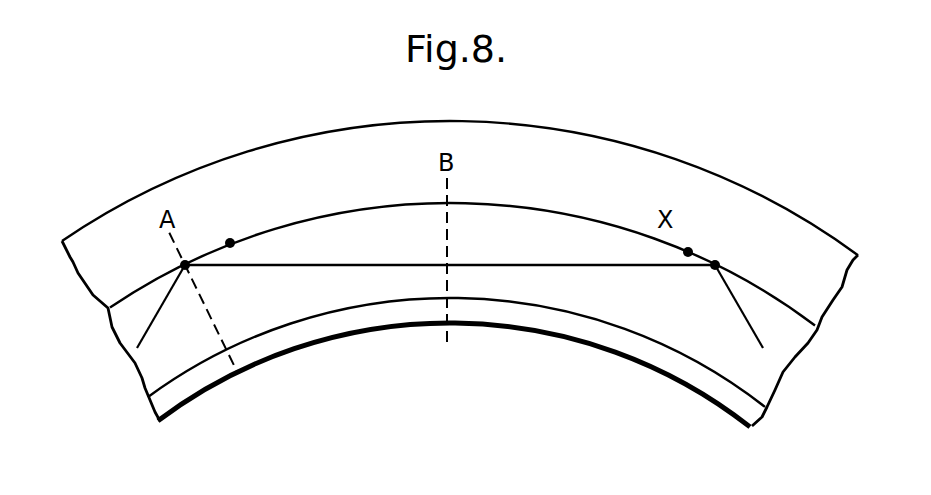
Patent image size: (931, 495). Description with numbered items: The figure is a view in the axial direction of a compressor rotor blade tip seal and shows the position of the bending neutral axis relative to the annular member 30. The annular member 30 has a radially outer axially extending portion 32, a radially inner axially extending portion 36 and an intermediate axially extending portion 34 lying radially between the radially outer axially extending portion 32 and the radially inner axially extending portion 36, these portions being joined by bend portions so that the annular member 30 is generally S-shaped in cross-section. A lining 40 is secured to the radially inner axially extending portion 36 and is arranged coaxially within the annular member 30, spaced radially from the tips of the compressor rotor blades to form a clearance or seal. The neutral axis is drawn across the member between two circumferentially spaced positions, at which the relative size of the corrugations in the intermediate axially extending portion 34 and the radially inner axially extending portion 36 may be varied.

The annular member 30 is at (737, 283).
The radially outer axially extending portion 32 is at (620, 140).
The intermediate axially extending portion 34 is at (548, 210).
The radially inner axially extending portion 36 is at (585, 318).
The lining 40 is at (492, 313).